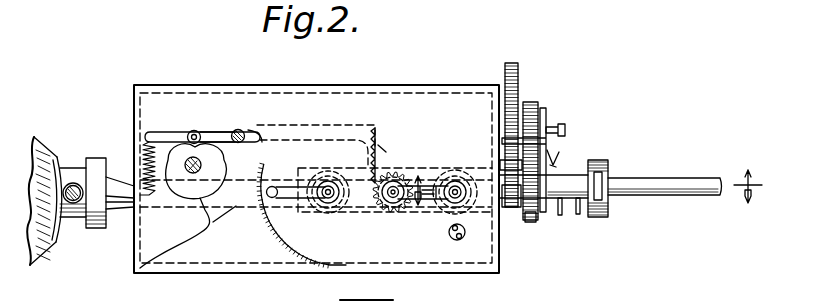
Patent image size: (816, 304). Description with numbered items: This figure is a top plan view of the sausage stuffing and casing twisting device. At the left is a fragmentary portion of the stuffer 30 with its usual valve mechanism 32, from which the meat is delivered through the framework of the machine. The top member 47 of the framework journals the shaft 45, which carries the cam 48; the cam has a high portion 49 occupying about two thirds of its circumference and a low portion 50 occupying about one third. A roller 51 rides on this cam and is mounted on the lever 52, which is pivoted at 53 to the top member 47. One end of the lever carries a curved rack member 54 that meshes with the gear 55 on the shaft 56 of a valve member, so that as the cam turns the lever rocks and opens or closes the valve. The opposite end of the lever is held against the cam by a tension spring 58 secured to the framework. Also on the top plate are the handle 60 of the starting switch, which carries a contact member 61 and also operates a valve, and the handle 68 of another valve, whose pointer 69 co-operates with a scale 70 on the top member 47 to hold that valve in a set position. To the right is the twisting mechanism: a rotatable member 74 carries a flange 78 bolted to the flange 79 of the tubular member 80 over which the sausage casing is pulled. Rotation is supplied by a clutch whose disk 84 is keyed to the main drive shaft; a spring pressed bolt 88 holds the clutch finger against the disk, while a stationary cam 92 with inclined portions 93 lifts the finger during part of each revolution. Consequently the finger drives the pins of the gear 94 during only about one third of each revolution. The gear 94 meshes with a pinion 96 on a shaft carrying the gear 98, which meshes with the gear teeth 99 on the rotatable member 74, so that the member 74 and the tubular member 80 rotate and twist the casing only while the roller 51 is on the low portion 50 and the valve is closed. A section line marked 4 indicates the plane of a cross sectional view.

The section line 4 is at (588, 173).
The stuffer 30 is at (34, 266).
The valve mechanism 32 is at (73, 205).
The shaft 45 is at (184, 152).
The top member 47 is at (362, 108).
The cam 48 is at (190, 186).
The high portion 49 is at (212, 221).
The low portion 50 is at (223, 130).
The roller 51 is at (195, 130).
The lever 52 is at (241, 130).
The pivot 53 is at (250, 129).
The curved rack member 54 is at (388, 140).
The gear 55 is at (412, 152).
The shaft 56 is at (391, 197).
The tension spring 58 is at (143, 152).
The handle 60 is at (442, 181).
The contact member 61 is at (448, 233).
The handle 68 is at (300, 185).
The pointer 69 is at (270, 186).
The scale 70 is at (274, 238).
The rotatable member 74 is at (578, 204).
The flange 78 is at (609, 162).
The flange 79 is at (610, 174).
The tubular member 80 is at (690, 188).
The disk 84 is at (553, 152).
The bolt 88 is at (557, 127).
The stationary cam 92 is at (560, 160).
The inclined portions 93 is at (558, 158).
The gear 94 is at (533, 222).
The pinion 96 is at (539, 104).
The gear 98 is at (518, 86).
The gear teeth 99 is at (513, 208).